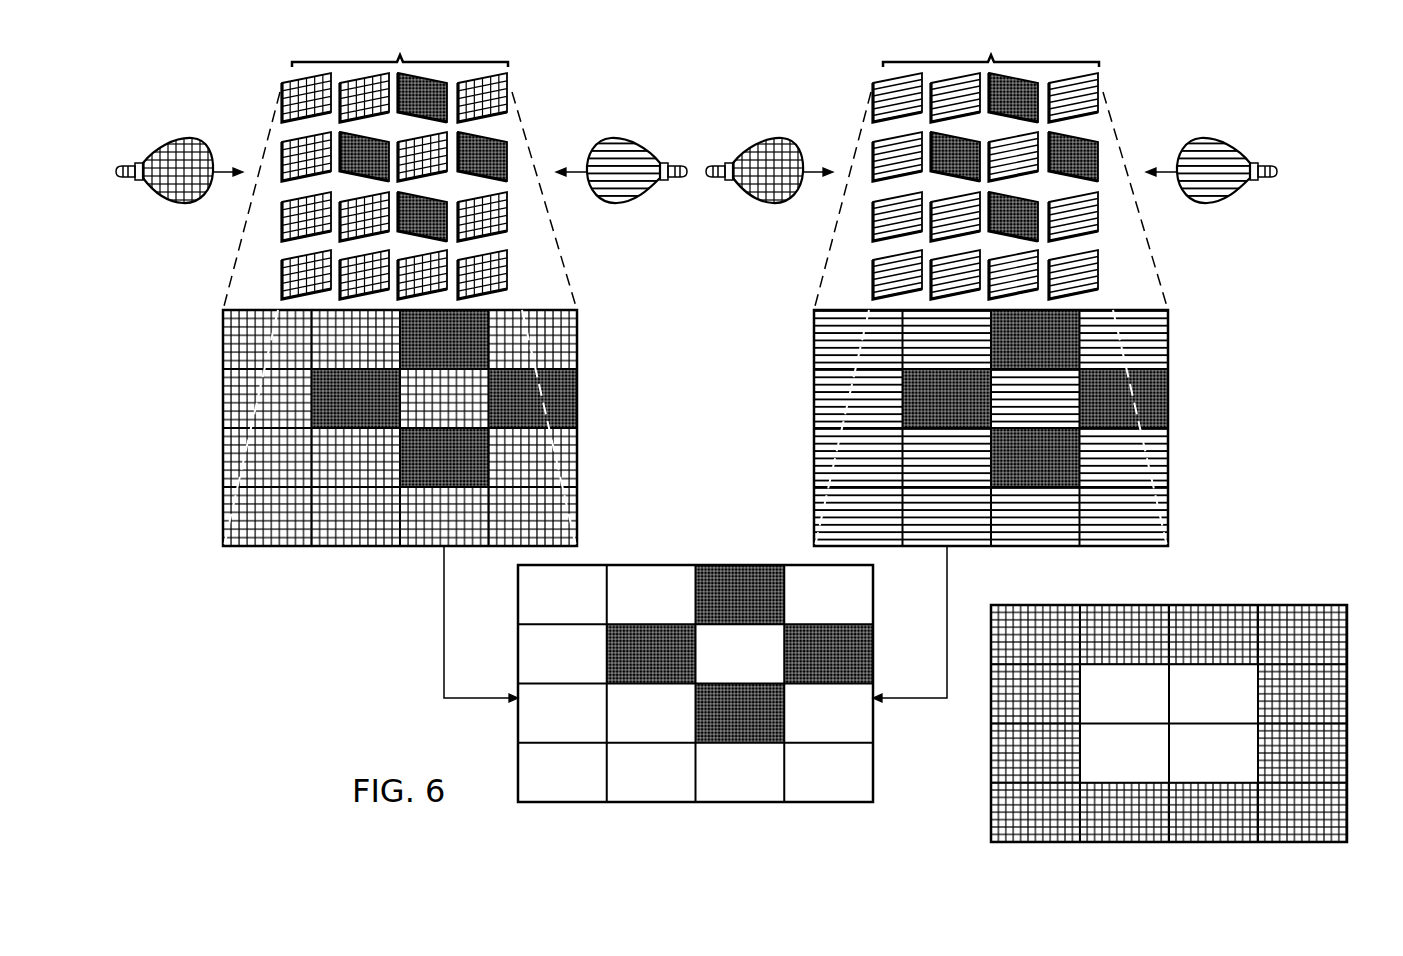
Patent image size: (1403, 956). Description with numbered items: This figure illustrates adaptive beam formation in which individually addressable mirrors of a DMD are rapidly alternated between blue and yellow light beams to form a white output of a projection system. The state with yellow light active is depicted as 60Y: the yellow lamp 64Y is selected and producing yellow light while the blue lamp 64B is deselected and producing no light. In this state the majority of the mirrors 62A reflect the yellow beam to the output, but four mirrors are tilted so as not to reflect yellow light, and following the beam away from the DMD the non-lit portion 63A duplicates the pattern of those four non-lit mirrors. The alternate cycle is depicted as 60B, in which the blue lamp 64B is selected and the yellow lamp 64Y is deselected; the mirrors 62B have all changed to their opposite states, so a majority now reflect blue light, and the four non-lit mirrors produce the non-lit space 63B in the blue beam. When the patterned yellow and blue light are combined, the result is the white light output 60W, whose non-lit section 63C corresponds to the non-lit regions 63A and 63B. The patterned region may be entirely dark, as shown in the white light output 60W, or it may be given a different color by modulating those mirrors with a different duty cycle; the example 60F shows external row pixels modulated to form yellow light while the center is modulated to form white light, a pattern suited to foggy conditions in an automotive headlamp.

The DMD mirrors (yellow cycle) 62A is at (395, 163).
The DMD mirrors (blue cycle) 62B is at (986, 163).
The non-lit portion 63A is at (570, 395).
The non-lit space 63B is at (1161, 395).
The non-lit section 63C is at (865, 653).
The yellow lamp 64Y is at (165, 143).
The blue lamp 64B is at (632, 140).
The white light system with yellow light active 60Y is at (434, 456).
The alternate cycle with blue light active 60B is at (1025, 456).
The white light output 60W is at (729, 679).
The fog pattern example 60F is at (1251, 599).